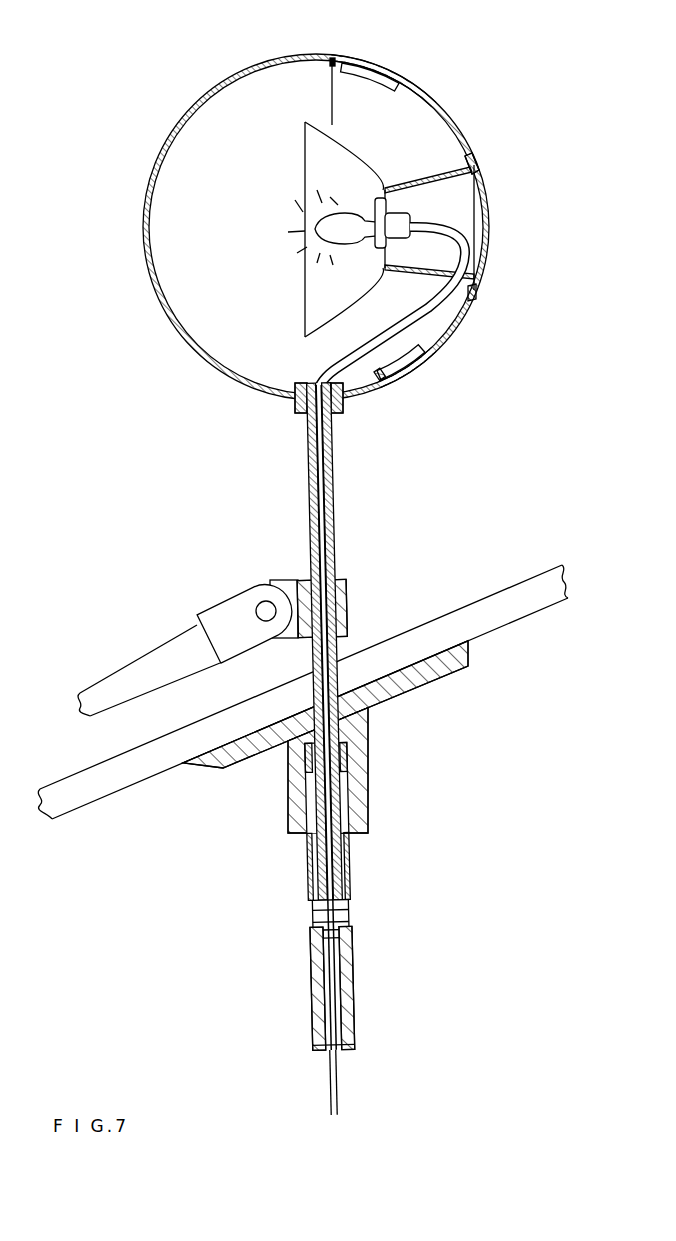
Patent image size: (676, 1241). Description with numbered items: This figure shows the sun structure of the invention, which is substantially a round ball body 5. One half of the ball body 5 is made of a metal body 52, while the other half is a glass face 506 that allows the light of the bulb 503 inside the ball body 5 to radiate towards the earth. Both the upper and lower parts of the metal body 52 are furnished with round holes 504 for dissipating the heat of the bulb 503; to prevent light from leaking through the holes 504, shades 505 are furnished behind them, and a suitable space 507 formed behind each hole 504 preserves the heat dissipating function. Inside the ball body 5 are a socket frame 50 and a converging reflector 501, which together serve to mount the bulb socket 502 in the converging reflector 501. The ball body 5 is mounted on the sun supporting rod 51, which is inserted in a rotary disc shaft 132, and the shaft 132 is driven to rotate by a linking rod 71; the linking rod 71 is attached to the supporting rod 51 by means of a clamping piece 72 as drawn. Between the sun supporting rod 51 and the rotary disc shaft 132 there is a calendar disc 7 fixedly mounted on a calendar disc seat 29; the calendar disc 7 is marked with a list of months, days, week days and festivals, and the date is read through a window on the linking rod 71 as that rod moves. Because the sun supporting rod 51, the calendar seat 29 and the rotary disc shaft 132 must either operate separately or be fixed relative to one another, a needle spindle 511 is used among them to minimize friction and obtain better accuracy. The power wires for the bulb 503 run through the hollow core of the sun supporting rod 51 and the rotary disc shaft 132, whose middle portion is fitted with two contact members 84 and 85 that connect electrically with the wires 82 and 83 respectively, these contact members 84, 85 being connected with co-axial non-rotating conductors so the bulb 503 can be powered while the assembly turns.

The round ball body 5 is at (433, 101).
The calendar disc 7 is at (510, 597).
The calendar disc seat 29 is at (445, 676).
The socket frame 50 is at (452, 180).
The sun supporting rod 51 is at (337, 489).
The metal body 52 is at (476, 163).
The linking rod 71 is at (225, 607).
The clamp block 72 is at (350, 582).
The wire 82 is at (340, 1086).
The wire 83 is at (468, 257).
The contact member 84 is at (347, 912).
The contact member 85 is at (338, 927).
The rotary disc shaft 132 is at (352, 1003).
The converging reflector 501 is at (359, 177).
The bulb socket 502 is at (400, 222).
The bulb 503 is at (320, 229).
The round hole 504 is at (380, 69).
The shade 505 is at (347, 62).
The glass face 506 is at (221, 89).
The space 507 is at (364, 71).
The needle spindle 511 is at (348, 759).